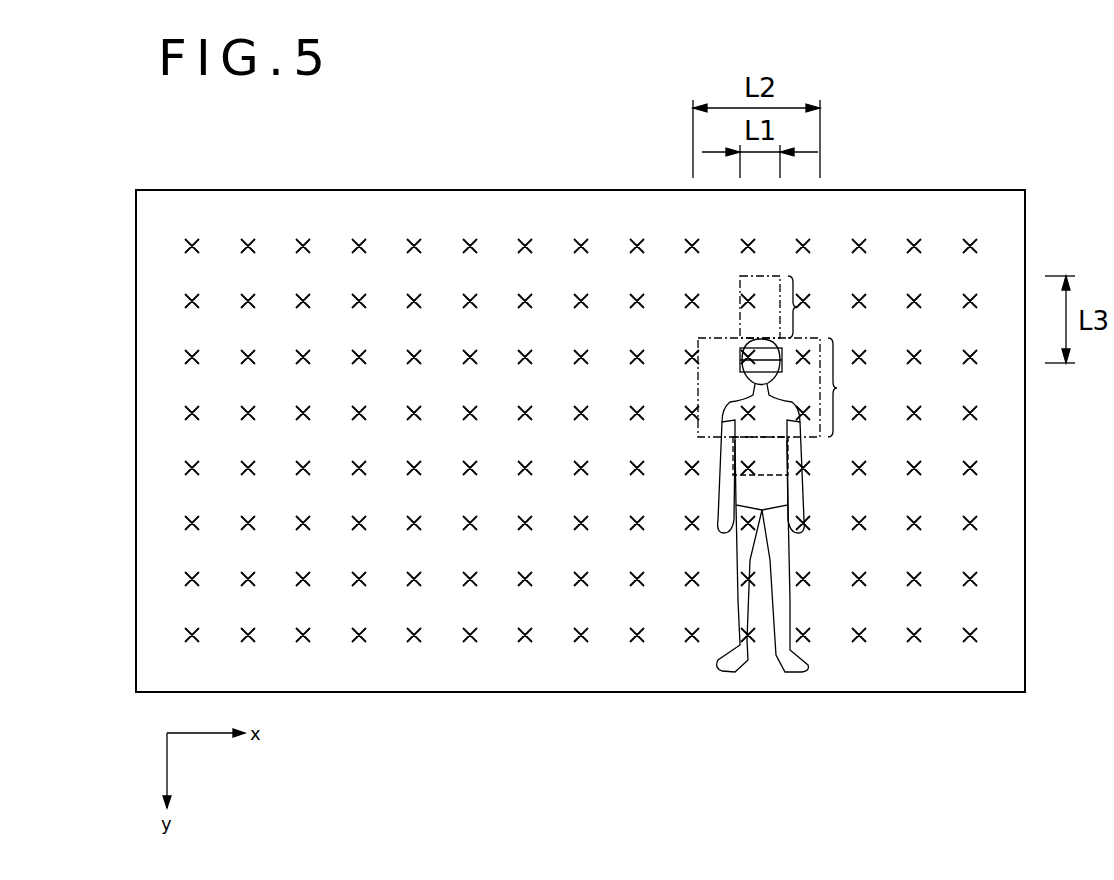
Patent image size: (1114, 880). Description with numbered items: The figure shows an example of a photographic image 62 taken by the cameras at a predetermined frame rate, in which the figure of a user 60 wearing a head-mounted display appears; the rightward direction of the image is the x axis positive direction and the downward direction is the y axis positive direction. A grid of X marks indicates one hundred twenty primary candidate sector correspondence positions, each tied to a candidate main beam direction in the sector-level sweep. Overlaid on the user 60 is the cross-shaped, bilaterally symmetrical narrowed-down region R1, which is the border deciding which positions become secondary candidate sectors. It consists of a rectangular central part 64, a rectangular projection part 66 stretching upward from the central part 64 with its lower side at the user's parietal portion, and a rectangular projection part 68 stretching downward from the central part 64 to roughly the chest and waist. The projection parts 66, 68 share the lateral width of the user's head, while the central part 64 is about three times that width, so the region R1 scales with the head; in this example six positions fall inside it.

The user 60 is at (785, 620).
The photographic image 62 is at (436, 692).
The rectangular central part 64 is at (788, 387).
The rectangular projection part 66 is at (797, 307).
The rectangular projection part 68 is at (790, 457).
The narrowed-down region R1 is at (768, 274).